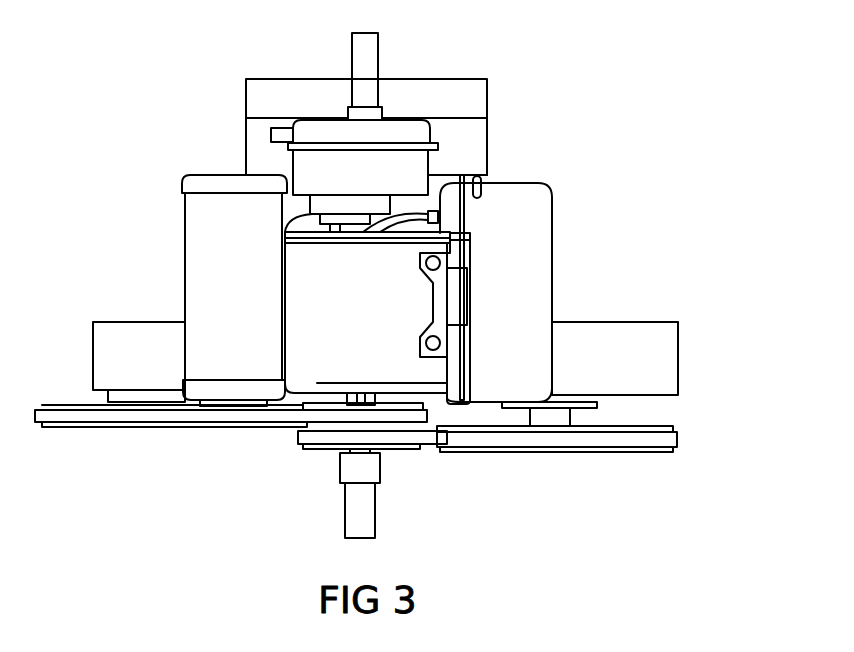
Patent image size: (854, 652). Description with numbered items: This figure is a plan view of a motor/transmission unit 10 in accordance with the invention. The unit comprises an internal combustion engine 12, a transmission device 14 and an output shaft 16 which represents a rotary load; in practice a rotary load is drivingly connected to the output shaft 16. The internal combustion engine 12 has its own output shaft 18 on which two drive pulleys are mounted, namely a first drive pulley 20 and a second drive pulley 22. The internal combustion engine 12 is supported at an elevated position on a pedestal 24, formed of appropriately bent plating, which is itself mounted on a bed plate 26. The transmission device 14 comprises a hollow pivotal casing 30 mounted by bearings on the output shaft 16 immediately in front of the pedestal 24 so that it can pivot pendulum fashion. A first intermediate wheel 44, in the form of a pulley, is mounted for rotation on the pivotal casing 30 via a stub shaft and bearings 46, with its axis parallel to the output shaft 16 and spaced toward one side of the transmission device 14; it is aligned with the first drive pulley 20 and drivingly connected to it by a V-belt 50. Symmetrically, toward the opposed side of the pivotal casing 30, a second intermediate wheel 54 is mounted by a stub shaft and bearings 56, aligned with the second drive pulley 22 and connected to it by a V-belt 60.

The motor/transmission unit 10 is at (122, 238).
The internal combustion engine 12 is at (231, 149).
The transmission device 14 is at (278, 466).
The output shaft 16 is at (367, 58).
The output shaft 18 is at (357, 401).
The first drive pulley 20 is at (323, 452).
The second drive pulley 22 is at (322, 404).
The pedestal 24 is at (468, 146).
The bed plate 26 is at (434, 98).
The pivotal casing 30 is at (617, 342).
The first intermediate wheel 44 is at (608, 440).
The stub shaft and bearings 46 is at (632, 410).
The V-belt 50 is at (512, 437).
The second intermediate wheel 54 is at (118, 428).
The stub shaft and bearings 56 is at (95, 400).
The V-belt 60 is at (215, 415).